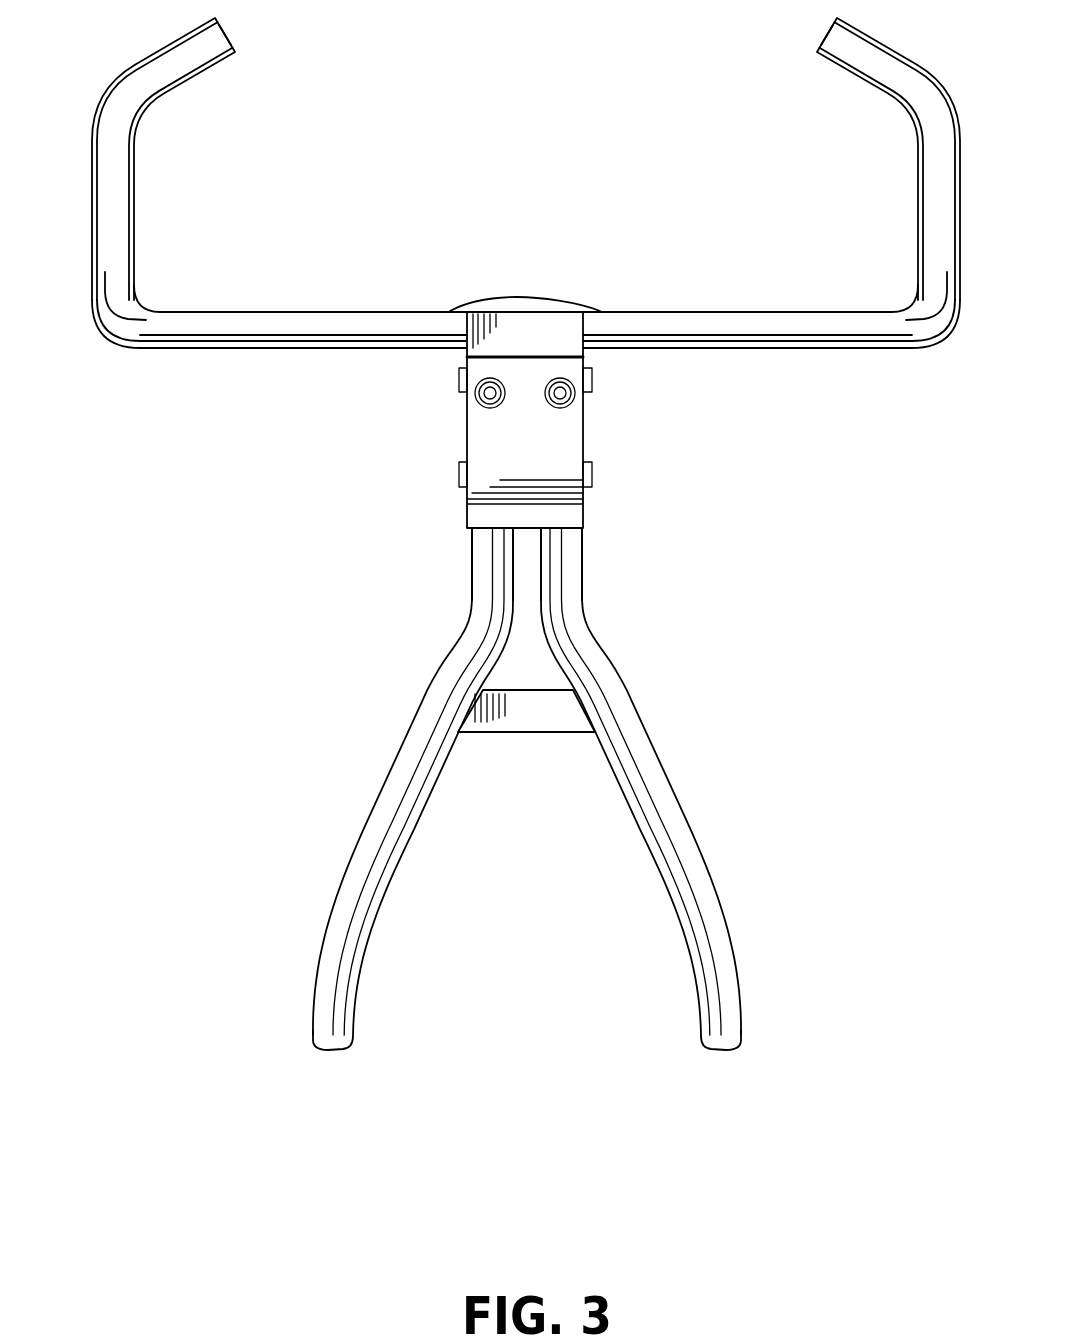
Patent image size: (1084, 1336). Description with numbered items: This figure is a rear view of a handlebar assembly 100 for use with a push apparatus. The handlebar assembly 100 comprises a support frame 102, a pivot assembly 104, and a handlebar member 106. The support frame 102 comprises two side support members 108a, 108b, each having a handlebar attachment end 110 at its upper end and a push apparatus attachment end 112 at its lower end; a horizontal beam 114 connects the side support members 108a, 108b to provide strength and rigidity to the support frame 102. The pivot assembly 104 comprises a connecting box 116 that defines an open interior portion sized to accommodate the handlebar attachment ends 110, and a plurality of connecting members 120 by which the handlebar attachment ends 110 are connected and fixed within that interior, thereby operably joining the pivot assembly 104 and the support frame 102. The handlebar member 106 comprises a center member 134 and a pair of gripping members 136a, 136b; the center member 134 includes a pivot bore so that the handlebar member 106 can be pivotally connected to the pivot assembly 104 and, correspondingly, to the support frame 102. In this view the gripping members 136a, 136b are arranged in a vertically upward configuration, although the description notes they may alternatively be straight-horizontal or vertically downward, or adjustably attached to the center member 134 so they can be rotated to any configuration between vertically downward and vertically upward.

The handlebar assembly 100 is at (198, 930).
The support frame 102 is at (670, 790).
The pivot assembly 104 is at (583, 508).
The handlebar member 106 is at (323, 313).
The side support member 108a is at (720, 910).
The side support member 108b is at (378, 797).
The handlebar attachment end 110 is at (492, 532).
The push apparatus attachment end 112 is at (333, 1053).
The horizontal beam 114 is at (510, 733).
The connecting box 116 is at (502, 496).
The connecting members 120 is at (481, 405).
The center member 134 is at (597, 327).
The gripping member 136a is at (918, 152).
The gripping member 136b is at (133, 177).